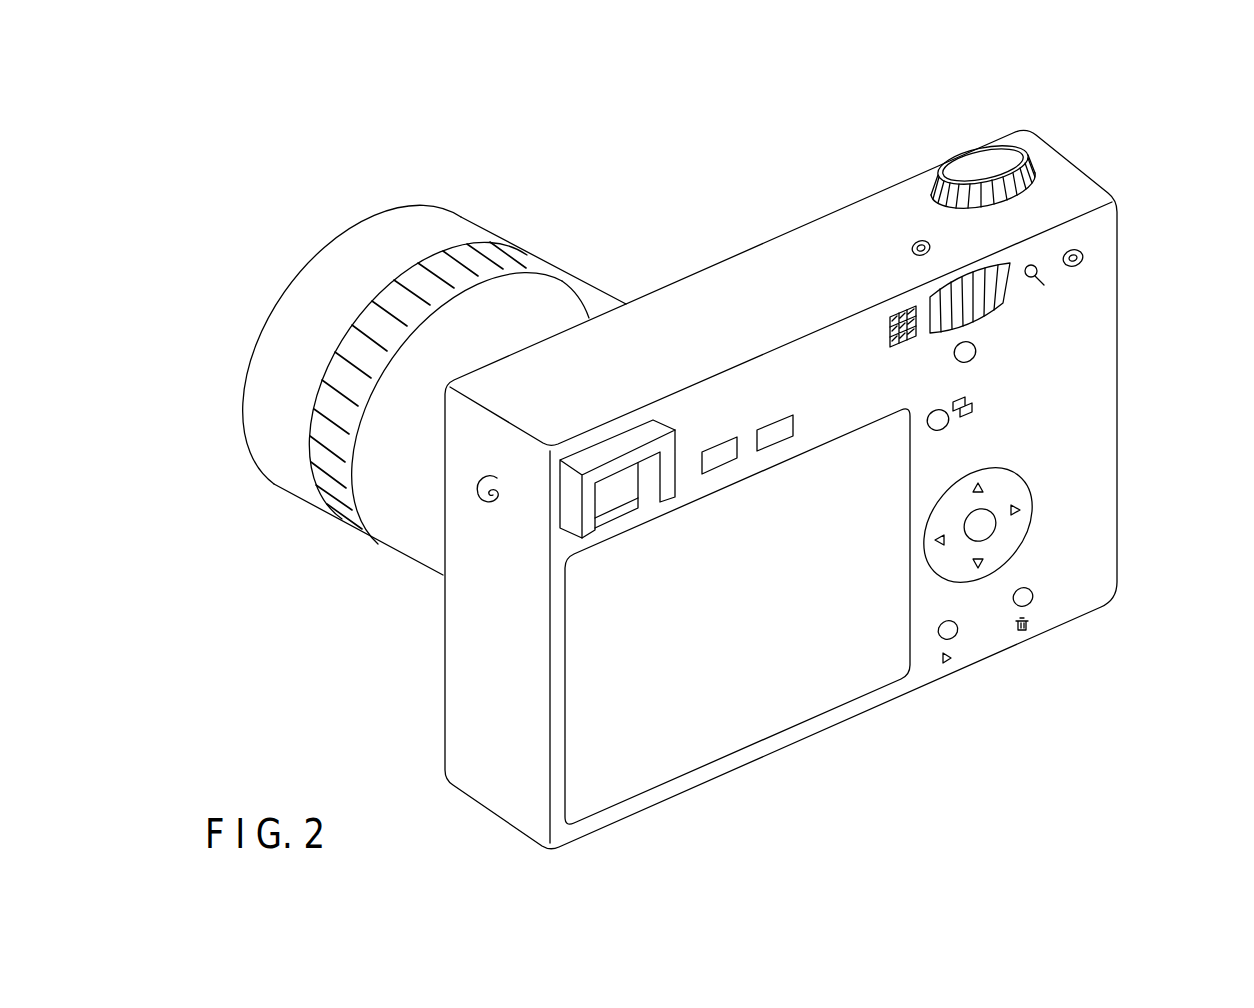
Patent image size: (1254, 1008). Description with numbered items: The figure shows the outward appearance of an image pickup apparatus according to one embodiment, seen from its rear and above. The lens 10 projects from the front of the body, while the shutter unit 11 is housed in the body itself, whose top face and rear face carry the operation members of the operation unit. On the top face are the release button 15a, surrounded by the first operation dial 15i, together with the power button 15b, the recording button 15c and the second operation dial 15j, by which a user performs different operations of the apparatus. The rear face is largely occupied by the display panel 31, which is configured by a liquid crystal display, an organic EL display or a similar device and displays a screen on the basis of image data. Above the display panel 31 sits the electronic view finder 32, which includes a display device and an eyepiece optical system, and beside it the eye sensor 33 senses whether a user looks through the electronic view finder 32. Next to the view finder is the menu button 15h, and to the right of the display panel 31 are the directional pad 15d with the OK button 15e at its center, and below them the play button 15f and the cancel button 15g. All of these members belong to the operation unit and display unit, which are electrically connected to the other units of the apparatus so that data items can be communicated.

The lens 10 is at (524, 203).
The shutter unit 11 is at (1123, 112).
The release button 15a is at (976, 165).
The power button 15b is at (912, 250).
The recording button 15c is at (1083, 249).
The directional pad 15d is at (1010, 490).
The OK button 15e is at (983, 527).
The play button 15f is at (958, 633).
The cancel button 15g is at (1033, 597).
The menu button 15h is at (738, 445).
The first operation dial 15i is at (1025, 160).
The second operation dial 15j is at (1013, 293).
The display panel 31 is at (755, 715).
The electronic view finder (EVF) 32 is at (605, 490).
The eye sensor 33 is at (642, 503).